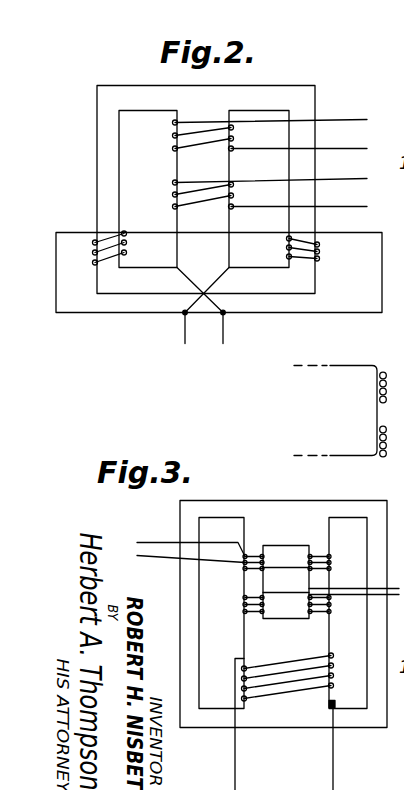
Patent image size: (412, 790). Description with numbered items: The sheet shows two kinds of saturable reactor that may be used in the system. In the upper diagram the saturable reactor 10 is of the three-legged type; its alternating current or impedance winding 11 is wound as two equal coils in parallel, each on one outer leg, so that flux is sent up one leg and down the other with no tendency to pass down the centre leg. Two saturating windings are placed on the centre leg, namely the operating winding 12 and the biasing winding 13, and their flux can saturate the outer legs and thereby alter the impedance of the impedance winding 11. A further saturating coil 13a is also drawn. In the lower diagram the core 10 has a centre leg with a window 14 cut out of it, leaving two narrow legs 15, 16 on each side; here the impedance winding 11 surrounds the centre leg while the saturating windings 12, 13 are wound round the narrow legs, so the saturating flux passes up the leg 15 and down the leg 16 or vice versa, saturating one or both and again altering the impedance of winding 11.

In FIG. 2, the saturable reactor 10 is at (316, 93).
In FIG. 3, the saturable reactor 10 is at (203, 500).
In FIG. 2, the impedance winding 11 is at (93, 263).
In FIG. 3, the impedance winding 11 is at (305, 690).
In FIG. 2, the operating winding 12 is at (234, 133).
In FIG. 3, the operating winding 12 is at (242, 565).
In FIG. 2, the biasing winding 13 is at (234, 191).
In FIG. 3, the biasing winding 13 is at (330, 590).
In FIG. 2, the auxiliary winding 13a is at (378, 410).
In FIG. 3, the window 14 is at (286, 582).
In FIG. 3, the narrow leg 15 is at (243, 613).
In FIG. 3, the narrow leg 16 is at (319, 613).